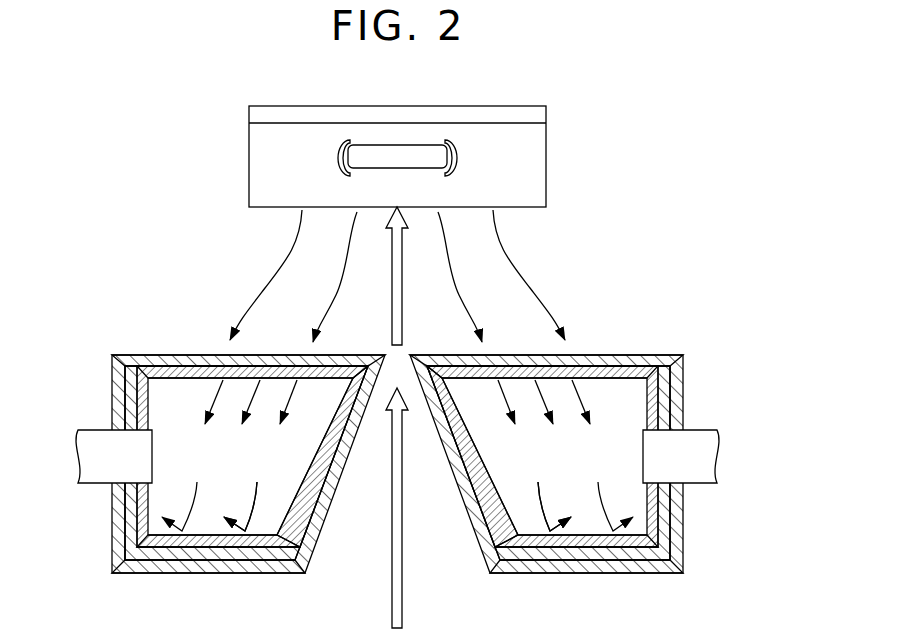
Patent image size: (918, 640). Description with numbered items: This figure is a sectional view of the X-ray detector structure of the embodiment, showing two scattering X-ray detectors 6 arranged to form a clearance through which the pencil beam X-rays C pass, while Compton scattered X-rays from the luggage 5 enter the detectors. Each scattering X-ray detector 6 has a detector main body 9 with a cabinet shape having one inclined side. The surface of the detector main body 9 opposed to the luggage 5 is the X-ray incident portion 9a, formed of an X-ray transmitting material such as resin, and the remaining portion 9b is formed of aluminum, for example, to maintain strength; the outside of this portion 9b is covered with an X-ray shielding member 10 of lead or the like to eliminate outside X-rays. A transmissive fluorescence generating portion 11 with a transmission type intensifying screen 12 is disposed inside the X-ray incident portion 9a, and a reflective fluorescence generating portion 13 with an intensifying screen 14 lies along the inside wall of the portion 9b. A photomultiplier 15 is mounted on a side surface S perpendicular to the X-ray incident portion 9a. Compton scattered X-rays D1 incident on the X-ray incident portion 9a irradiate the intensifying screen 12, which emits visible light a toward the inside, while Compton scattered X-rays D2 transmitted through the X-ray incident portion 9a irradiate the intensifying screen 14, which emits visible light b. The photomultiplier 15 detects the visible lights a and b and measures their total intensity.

The luggage 5 is at (546, 147).
The scattering X-ray detector 6 is at (397, 438).
The detector main body 9 is at (113, 375).
The X-ray incident portion 9a is at (167, 359).
The portion of the detector main body excepting the X-ray incident portion 9b is at (167, 561).
The X-ray shielding member 10 is at (117, 550).
The transmissive fluorescence generating portion 11 is at (206, 368).
The transmission type intensifying screen 12 is at (270, 371).
The reflective fluorescence generating portion 13 is at (231, 548).
The intensifying screen 14 is at (284, 547).
The photomultiplier 15 is at (96, 431).
The side surface S is at (121, 516).
The visible light a is at (217, 413).
The visible light b is at (241, 517).
The pencil beam X-rays C is at (403, 300).
The Compton scattered X-rays D1 is at (281, 262).
The Compton scattered X-rays D2 is at (248, 518).